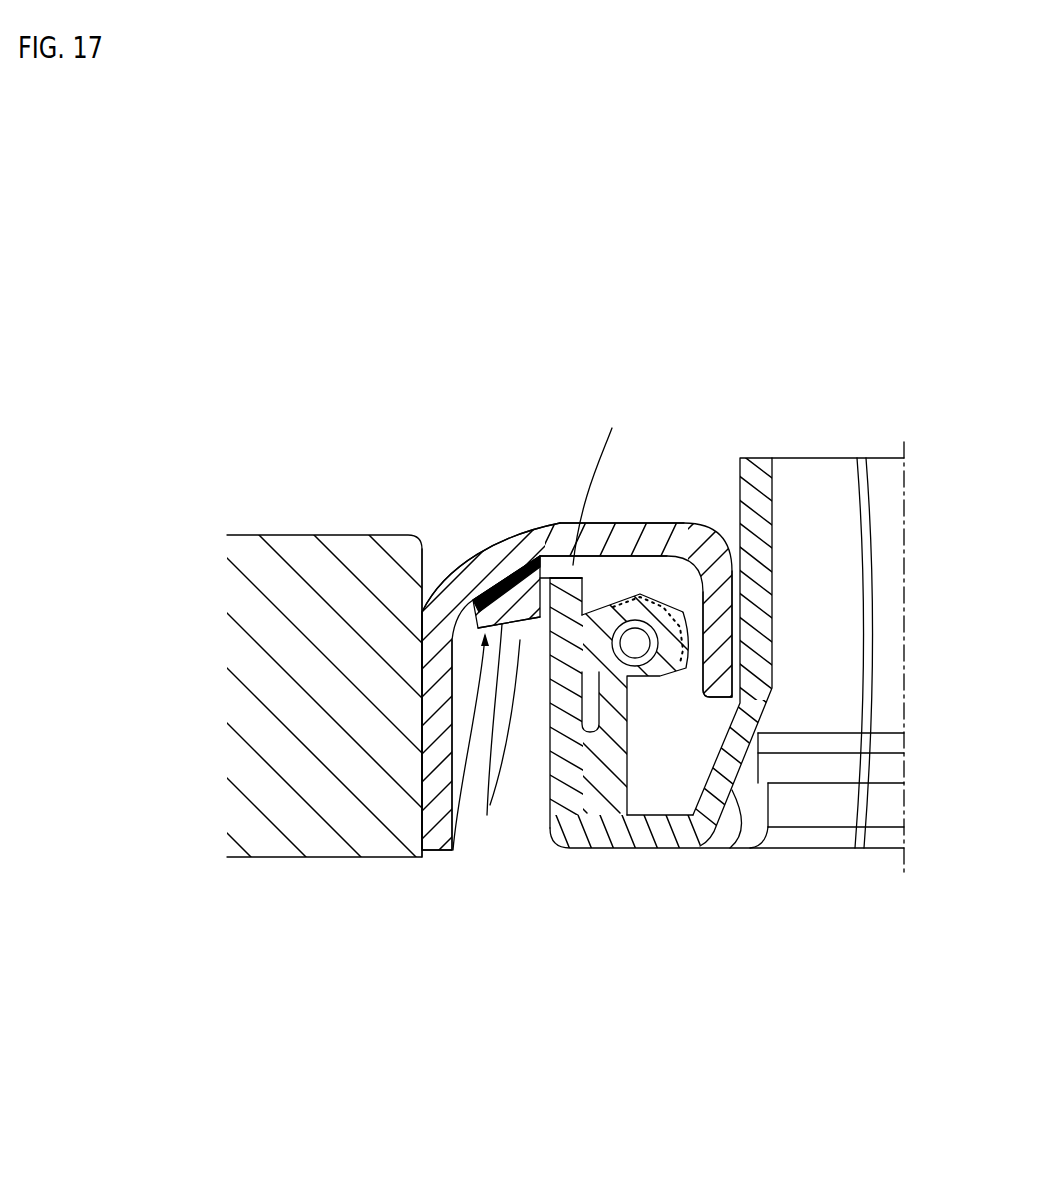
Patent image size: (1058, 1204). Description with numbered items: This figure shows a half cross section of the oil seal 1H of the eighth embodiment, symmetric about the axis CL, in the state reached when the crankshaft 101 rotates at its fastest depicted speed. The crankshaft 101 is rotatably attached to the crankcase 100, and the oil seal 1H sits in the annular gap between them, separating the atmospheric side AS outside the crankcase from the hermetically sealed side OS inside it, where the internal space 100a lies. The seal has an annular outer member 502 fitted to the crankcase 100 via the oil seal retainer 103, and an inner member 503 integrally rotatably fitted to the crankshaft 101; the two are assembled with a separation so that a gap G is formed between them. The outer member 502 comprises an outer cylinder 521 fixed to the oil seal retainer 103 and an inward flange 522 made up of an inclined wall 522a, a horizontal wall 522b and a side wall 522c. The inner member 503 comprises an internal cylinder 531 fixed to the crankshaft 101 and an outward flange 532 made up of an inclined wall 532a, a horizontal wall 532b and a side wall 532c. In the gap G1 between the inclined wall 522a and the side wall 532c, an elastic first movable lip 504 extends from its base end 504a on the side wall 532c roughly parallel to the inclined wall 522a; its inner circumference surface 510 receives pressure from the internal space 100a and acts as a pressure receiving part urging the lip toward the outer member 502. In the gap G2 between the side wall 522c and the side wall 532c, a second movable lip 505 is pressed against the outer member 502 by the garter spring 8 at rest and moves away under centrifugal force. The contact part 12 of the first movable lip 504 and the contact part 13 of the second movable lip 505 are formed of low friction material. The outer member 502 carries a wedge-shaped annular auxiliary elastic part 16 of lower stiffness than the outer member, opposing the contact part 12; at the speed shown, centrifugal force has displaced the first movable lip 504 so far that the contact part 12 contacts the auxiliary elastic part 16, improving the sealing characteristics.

The oil seal 1H is at (562, 388).
The crankcase 100 is at (283, 535).
The oil seal retainer 103 is at (356, 557).
The internal space 100a is at (386, 1022).
The crankshaft 101 is at (822, 480).
The outer member 502 is at (510, 360).
The outer cylinder 521 is at (423, 717).
The inward flange 522 is at (543, 523).
The inclined wall 522a is at (497, 548).
The horizontal wall 522b is at (637, 523).
The side wall 522c is at (738, 583).
The contact part 12 is at (446, 585).
The auxiliary elastic part 16 is at (514, 572).
The first movable lip 504 is at (422, 802).
The base end 504a is at (583, 580).
The inner circumference surface 510 is at (452, 850).
The inner member 503 is at (820, 947).
The internal cylinder 531 is at (772, 673).
The outward flange 532 is at (662, 848).
The inclined wall 532a is at (733, 848).
The horizontal wall 532b is at (613, 850).
The side wall 532c is at (548, 757).
The second movable lip 505 is at (703, 652).
The contact part 13 is at (690, 612).
The garter spring 8 is at (648, 680).
The gap G is at (625, 424).
The gap G1 is at (505, 846).
The gap G2 is at (567, 848).
The atmospheric side AS is at (675, 322).
The hermetically sealed side OS is at (653, 1022).
The axis CL is at (907, 658).